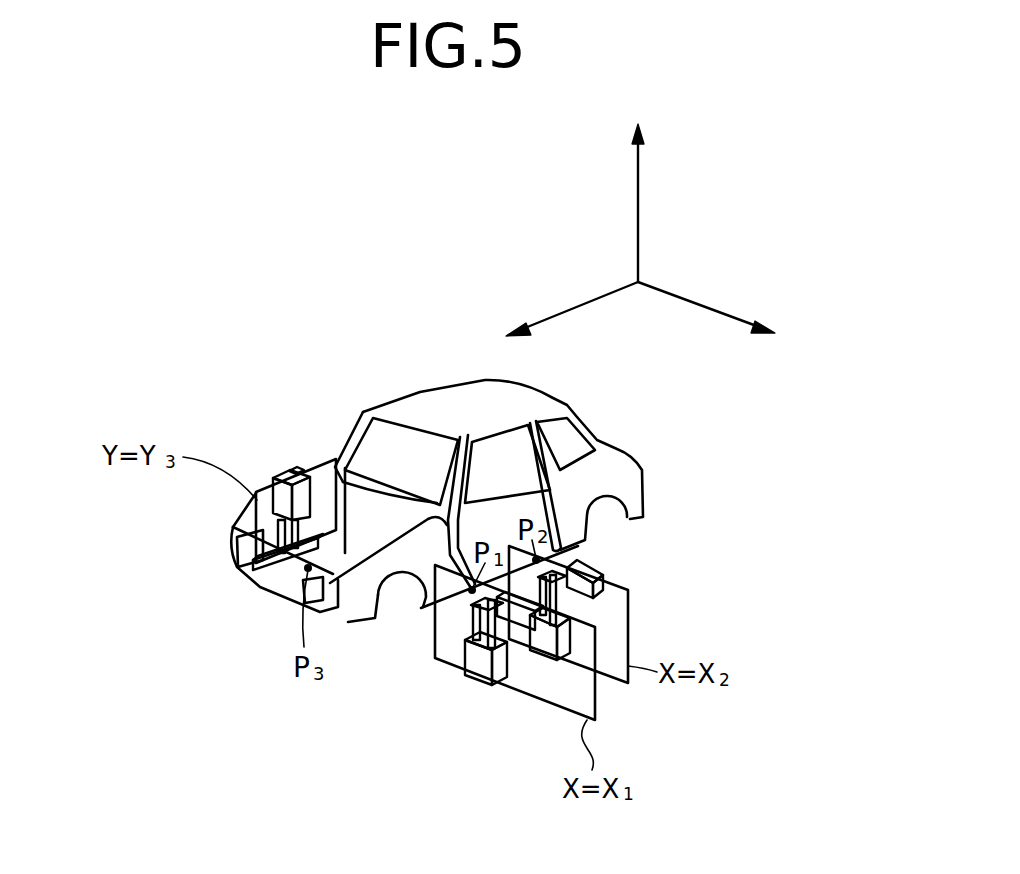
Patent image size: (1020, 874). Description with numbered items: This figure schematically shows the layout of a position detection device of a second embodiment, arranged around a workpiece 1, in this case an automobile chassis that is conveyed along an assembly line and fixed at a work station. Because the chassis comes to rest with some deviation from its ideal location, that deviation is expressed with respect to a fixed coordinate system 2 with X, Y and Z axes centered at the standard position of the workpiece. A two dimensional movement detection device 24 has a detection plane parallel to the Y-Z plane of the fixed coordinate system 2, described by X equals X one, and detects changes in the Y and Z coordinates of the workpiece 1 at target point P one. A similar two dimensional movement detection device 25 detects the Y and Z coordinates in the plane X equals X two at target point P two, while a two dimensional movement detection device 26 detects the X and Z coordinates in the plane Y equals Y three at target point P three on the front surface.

The workpiece 1 is at (437, 388).
The fixed coordinate system 2 is at (576, 307).
The two dimensional movement detection device 24 is at (480, 684).
The two dimensional movement detection device 25 is at (600, 571).
The two dimensional movement detection device 26 is at (297, 486).